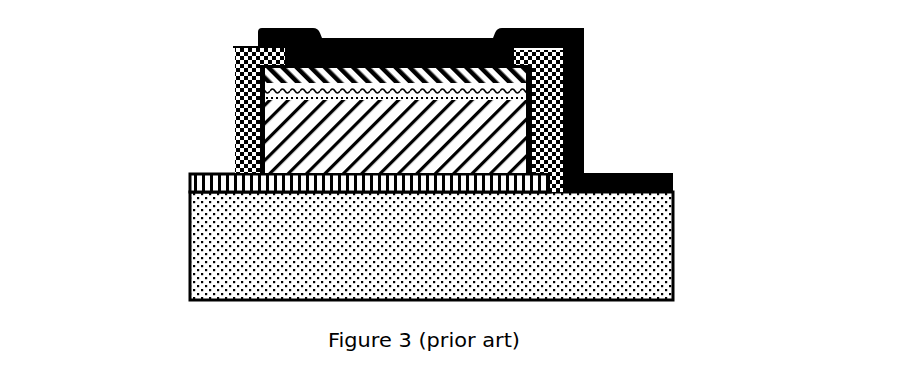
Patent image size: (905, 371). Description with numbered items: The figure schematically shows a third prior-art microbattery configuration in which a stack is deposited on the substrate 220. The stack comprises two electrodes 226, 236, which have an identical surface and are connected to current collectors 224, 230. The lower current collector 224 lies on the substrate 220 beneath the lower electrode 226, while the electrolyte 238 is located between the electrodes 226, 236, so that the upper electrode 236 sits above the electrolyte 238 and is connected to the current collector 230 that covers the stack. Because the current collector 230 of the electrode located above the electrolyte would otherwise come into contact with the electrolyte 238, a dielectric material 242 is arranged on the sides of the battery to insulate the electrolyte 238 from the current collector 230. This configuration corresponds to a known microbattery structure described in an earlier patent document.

The substrate 220 is at (555, 252).
The current collector 224 is at (208, 183).
The electrode 226 is at (323, 137).
The current collector 230 is at (584, 66).
The electrode 236 is at (235, 67).
The electrolyte 238 is at (233, 103).
The dielectric material 242 is at (584, 145).